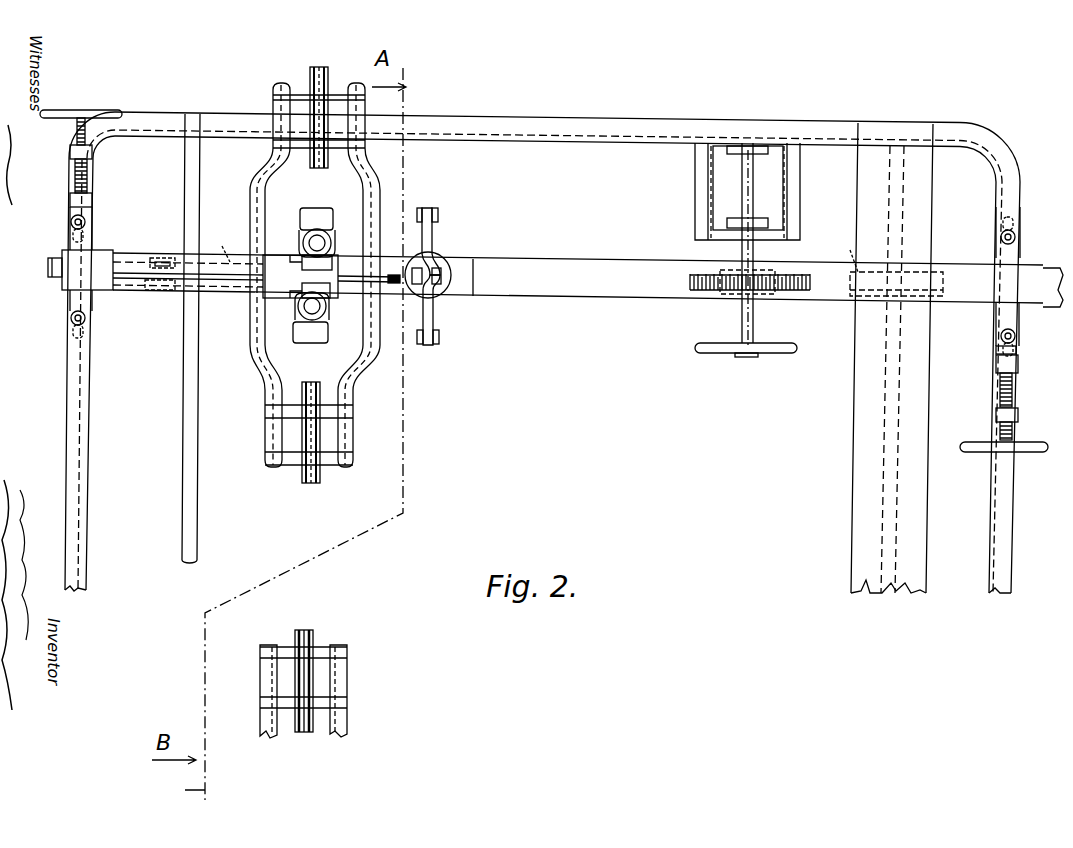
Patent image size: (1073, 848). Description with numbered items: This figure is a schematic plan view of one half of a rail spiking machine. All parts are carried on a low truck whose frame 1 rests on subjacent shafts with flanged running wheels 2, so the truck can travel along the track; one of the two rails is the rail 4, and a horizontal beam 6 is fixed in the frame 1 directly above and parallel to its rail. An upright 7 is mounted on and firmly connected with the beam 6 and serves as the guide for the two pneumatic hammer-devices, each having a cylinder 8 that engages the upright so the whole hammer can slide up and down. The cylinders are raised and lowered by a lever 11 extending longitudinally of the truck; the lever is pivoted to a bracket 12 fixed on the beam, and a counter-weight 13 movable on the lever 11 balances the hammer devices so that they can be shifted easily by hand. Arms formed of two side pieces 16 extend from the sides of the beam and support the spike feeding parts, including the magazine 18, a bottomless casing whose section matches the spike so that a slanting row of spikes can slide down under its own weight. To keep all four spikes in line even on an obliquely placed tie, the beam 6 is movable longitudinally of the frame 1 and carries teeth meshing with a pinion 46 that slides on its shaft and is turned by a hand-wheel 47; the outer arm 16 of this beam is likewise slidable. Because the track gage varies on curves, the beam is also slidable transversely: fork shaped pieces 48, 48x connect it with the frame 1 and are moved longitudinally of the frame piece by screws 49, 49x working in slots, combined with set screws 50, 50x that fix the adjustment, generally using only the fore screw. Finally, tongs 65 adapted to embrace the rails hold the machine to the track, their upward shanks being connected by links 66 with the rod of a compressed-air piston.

The frame 1 is at (888, 404).
The running wheels 2 is at (576, 261).
The rail 4 is at (1050, 285).
The beam 6 is at (578, 278).
The upright 7 is at (298, 255).
The cylinder 8 is at (329, 312).
The lever 11 is at (242, 276).
The bracket 12 is at (160, 286).
The counter-weight 13 is at (87, 270).
The arm side pieces 16 is at (347, 682).
The magazine 18 is at (314, 650).
The pinion 46 is at (770, 292).
The hand-wheel 47 is at (723, 357).
The fork shaped piece 48 is at (90, 248).
The clamp bar (right) 48x is at (1004, 292).
The screw 49 is at (86, 318).
The screw 49x is at (1000, 337).
The set screw 50 is at (92, 183).
The set screw 50x is at (997, 392).
The tongs 65 is at (448, 258).
The links 66 is at (433, 318).